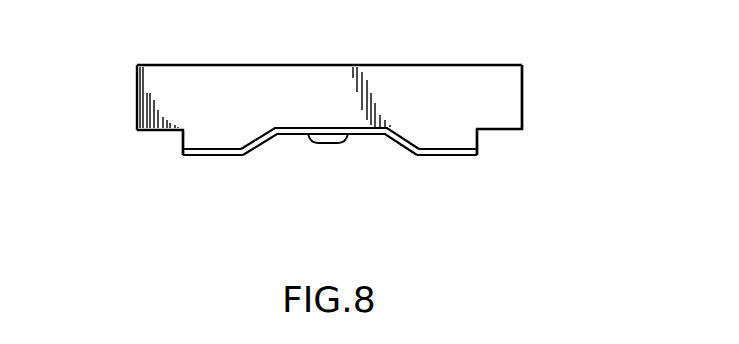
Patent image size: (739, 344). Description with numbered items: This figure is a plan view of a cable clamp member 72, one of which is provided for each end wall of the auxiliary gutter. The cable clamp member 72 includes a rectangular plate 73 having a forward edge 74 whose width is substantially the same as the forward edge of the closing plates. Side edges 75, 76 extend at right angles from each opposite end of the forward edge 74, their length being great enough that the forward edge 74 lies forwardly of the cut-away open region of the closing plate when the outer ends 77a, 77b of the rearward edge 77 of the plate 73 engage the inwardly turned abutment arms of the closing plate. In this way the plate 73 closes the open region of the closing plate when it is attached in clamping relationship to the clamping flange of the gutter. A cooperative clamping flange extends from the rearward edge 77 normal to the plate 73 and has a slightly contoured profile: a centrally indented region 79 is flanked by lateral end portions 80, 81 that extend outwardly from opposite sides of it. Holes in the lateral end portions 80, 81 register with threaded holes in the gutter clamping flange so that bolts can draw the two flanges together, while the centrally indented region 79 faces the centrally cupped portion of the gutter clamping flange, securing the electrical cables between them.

The cable clamp member 72 is at (508, 95).
The rectangular plate 73 is at (156, 88).
The forward edge 74 is at (287, 63).
The side edge 75 is at (136, 115).
The side edge 76 is at (522, 115).
The rearward edge 77 is at (248, 153).
The outer end of rearward edge 77a is at (155, 133).
The outer end of rearward edge 77b is at (505, 128).
The centrally indented region 79 is at (298, 137).
The lateral end portion 80 is at (205, 150).
The lateral end portion 81 is at (440, 155).